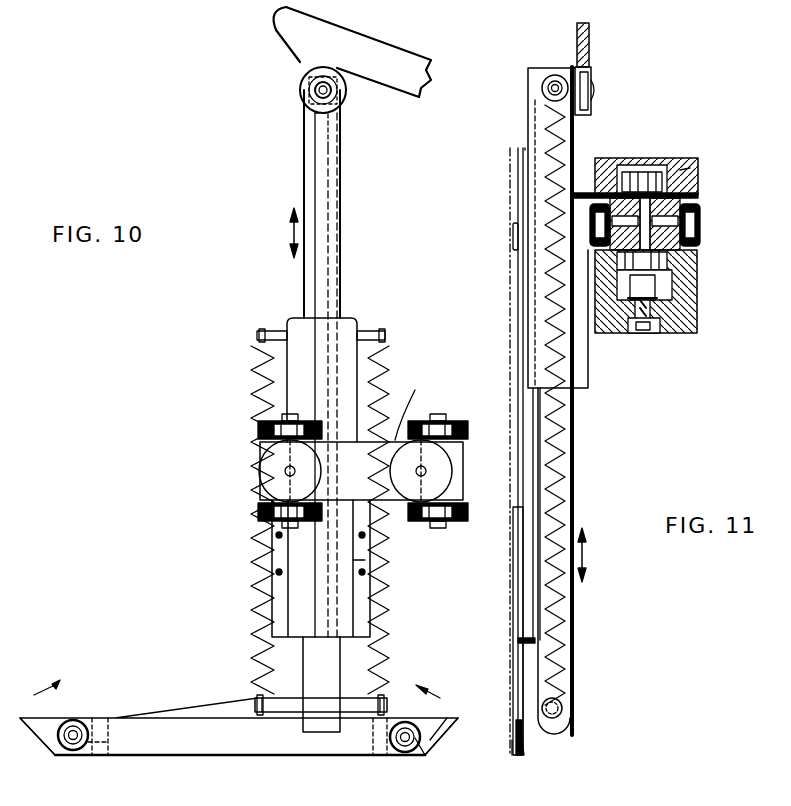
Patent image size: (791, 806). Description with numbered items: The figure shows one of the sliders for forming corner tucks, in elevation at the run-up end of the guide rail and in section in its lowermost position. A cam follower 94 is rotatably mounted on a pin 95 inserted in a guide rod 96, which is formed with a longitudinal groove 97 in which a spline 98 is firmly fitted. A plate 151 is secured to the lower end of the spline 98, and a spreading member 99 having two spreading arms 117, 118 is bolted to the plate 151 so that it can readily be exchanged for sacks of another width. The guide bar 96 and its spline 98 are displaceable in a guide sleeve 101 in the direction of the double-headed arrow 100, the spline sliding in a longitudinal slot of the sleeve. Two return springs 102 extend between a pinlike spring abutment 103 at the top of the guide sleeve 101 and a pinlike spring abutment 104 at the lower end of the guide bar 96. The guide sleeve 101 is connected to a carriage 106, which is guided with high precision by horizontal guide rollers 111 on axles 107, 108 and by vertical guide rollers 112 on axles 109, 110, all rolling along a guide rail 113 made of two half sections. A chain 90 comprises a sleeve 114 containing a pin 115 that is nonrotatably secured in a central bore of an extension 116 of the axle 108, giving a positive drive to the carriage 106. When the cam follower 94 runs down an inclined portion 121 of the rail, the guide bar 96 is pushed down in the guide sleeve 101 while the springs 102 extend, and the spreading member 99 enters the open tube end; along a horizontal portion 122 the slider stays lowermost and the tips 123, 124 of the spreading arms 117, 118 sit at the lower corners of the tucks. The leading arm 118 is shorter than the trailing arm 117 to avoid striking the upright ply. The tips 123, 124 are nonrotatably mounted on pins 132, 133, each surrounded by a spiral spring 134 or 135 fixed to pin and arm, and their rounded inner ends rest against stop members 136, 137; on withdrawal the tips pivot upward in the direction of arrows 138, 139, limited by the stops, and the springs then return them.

In FIG. 11, the chain 90 is at (642, 332).
In FIG. 10, the cam follower 94 is at (303, 80).
In FIG. 11, the cam follower 94 is at (588, 75).
In FIG. 10, the pin 95 is at (318, 90).
In FIG. 11, the pin 95 is at (594, 90).
In FIG. 10, the guide rod 96 is at (302, 162).
In FIG. 11, the guide rod 96 is at (568, 460).
In FIG. 10, the longitudinal groove 97 is at (318, 133).
In FIG. 10, the spline 98 is at (310, 200).
In FIG. 11, the spline 98 is at (536, 410).
In FIG. 10, the spreading member 99 is at (258, 642).
In FIG. 11, the spreading member 99 is at (518, 660).
In FIG. 10, the double-headed arrow 100 is at (290, 226).
In FIG. 11, the double-headed arrow 100 is at (586, 565).
In FIG. 10, the guide sleeve 101 is at (290, 370).
In FIG. 11, the guide sleeve 101 is at (580, 353).
In FIG. 10, the return springs 102 is at (265, 582).
In FIG. 11, the return springs 102 is at (572, 668).
In FIG. 10, the spring abutment 103 is at (262, 332).
In FIG. 11, the spring abutment 103 is at (546, 85).
In FIG. 10, the spring abutment 104 is at (258, 698).
In FIG. 11, the spring abutment 104 is at (560, 708).
In FIG. 10, the carriage 106 is at (417, 403).
In FIG. 11, the carriage 106 is at (638, 170).
In FIG. 10, the axle 107 is at (280, 455).
In FIG. 10, the axle 108 is at (452, 448).
In FIG. 11, the axle 108 is at (650, 175).
In FIG. 10, the axle 109 is at (284, 470).
In FIG. 10, the axle 110 is at (430, 470).
In FIG. 11, the axle 110 is at (680, 208).
In FIG. 10, the horizontal guide rollers 111 is at (262, 428).
In FIG. 11, the horizontal guide rollers 111 is at (690, 168).
In FIG. 10, the vertical guide rollers 112 is at (282, 480).
In FIG. 11, the vertical guide rollers 112 is at (618, 175).
In FIG. 11, the guide rail 113 is at (690, 318).
In FIG. 11, the sleeve 114 is at (658, 320).
In FIG. 11, the pin 115 is at (658, 290).
In FIG. 11, the extension 116 is at (672, 280).
In FIG. 10, the spreading arm 117 is at (143, 718).
In FIG. 10, the spreading arm 118 is at (420, 750).
In FIG. 10, the inclined portion 121 is at (395, 55).
In FIG. 11, the horizontal portion 122 is at (580, 36).
In FIG. 10, the tip 123 is at (45, 740).
In FIG. 10, the tip 124 is at (445, 735).
In FIG. 10, the pin 132 is at (75, 745).
In FIG. 10, the pin 133 is at (404, 750).
In FIG. 11, the pin 133 is at (525, 733).
In FIG. 10, the spiral spring 134 is at (73, 720).
In FIG. 10, the spiral spring 135 is at (405, 722).
In FIG. 11, the spiral spring 135 is at (524, 745).
In FIG. 10, the stop member 136 is at (115, 752).
In FIG. 10, the stop member 137 is at (375, 750).
In FIG. 11, the stop member 137 is at (512, 755).
In FIG. 10, the arrow 138 is at (34, 695).
In FIG. 10, the arrow 139 is at (437, 687).
In FIG. 10, the plate 151 is at (370, 565).
In FIG. 11, the plate 151 is at (520, 605).